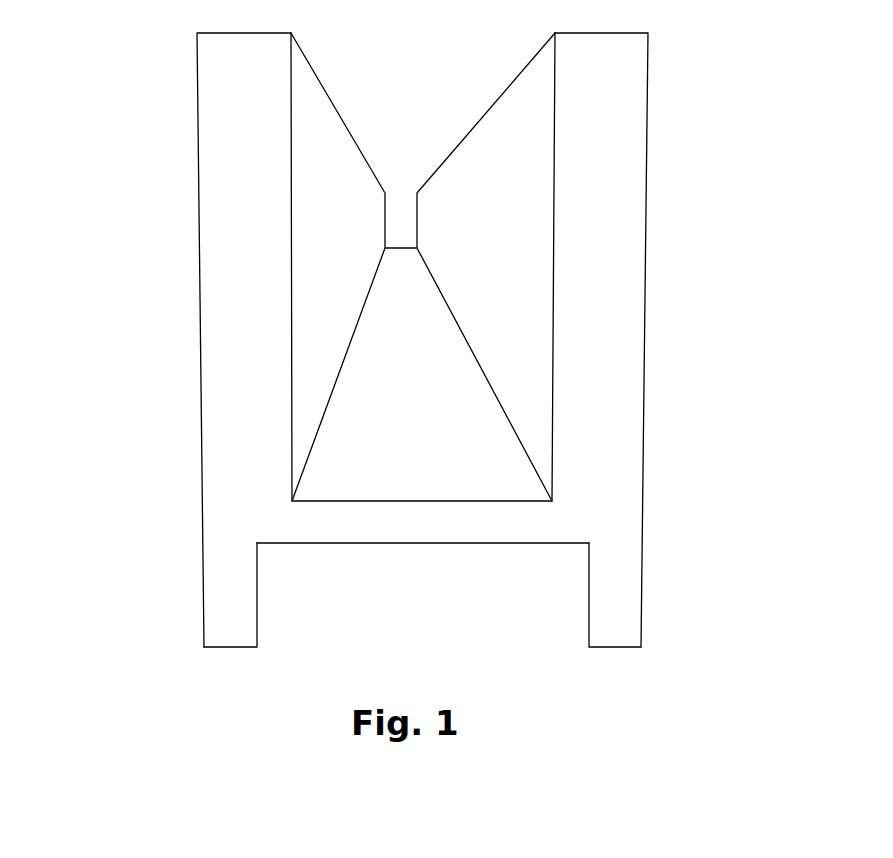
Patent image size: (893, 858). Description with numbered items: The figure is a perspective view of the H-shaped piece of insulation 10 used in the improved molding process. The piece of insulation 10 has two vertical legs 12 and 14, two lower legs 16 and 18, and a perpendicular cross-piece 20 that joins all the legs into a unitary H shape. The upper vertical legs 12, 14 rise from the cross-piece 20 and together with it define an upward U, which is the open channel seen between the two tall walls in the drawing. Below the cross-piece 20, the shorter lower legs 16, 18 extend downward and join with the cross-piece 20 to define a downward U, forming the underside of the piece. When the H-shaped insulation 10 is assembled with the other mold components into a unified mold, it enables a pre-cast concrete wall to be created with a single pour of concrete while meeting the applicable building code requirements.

The H-shaped piece of insulation 10 is at (200, 380).
The vertical leg 12 is at (197, 125).
The vertical leg 14 is at (599, 184).
The lower leg 16 is at (230, 633).
The lower leg 18 is at (609, 610).
The cross-piece 20 is at (433, 521).